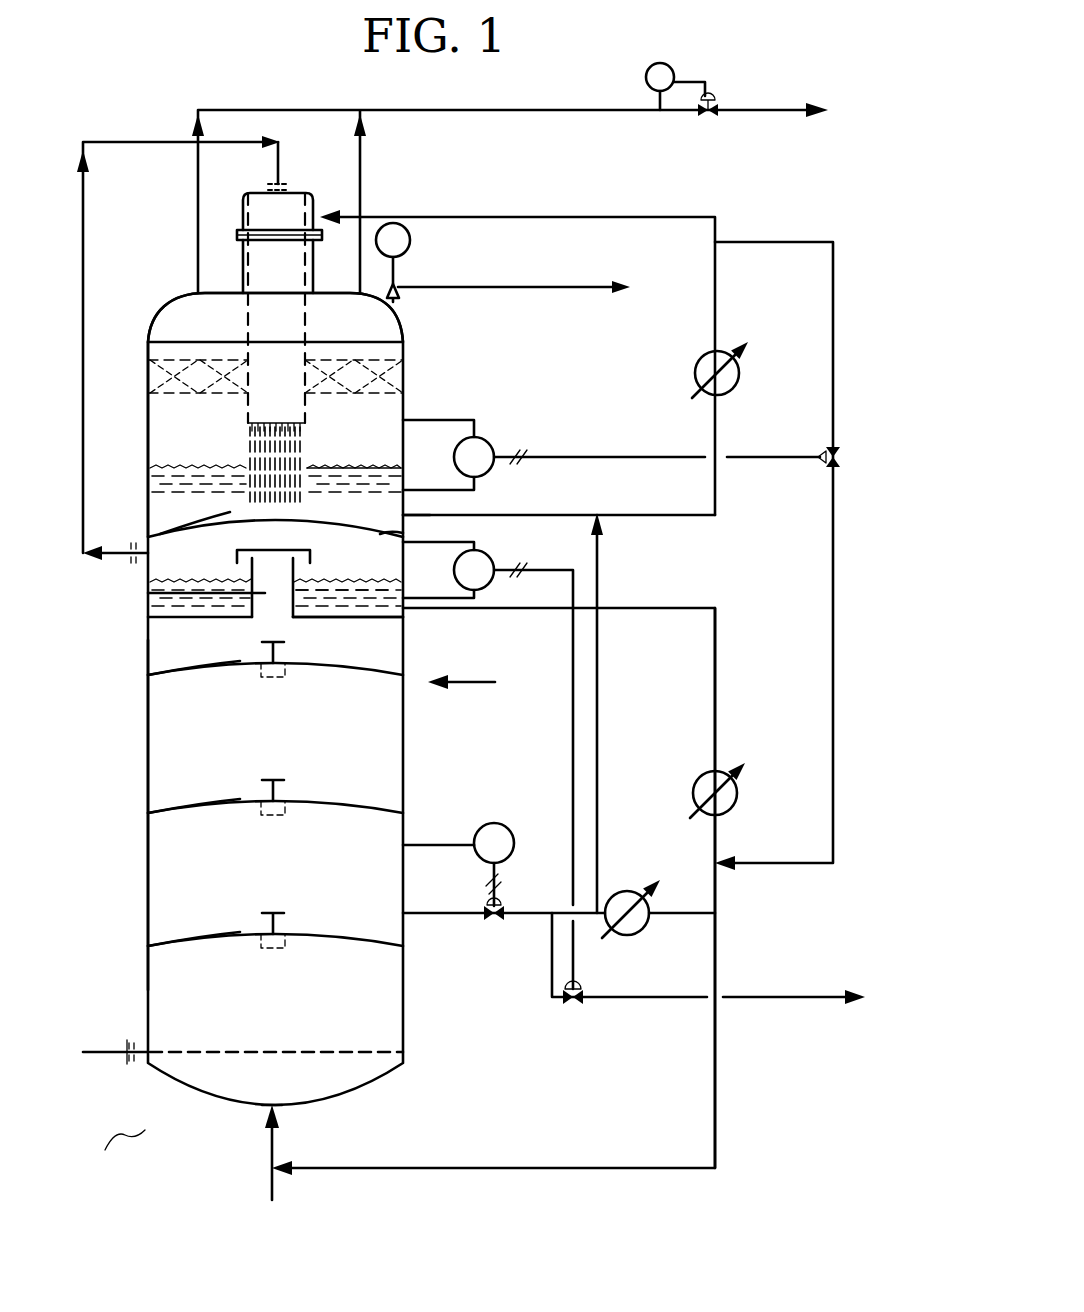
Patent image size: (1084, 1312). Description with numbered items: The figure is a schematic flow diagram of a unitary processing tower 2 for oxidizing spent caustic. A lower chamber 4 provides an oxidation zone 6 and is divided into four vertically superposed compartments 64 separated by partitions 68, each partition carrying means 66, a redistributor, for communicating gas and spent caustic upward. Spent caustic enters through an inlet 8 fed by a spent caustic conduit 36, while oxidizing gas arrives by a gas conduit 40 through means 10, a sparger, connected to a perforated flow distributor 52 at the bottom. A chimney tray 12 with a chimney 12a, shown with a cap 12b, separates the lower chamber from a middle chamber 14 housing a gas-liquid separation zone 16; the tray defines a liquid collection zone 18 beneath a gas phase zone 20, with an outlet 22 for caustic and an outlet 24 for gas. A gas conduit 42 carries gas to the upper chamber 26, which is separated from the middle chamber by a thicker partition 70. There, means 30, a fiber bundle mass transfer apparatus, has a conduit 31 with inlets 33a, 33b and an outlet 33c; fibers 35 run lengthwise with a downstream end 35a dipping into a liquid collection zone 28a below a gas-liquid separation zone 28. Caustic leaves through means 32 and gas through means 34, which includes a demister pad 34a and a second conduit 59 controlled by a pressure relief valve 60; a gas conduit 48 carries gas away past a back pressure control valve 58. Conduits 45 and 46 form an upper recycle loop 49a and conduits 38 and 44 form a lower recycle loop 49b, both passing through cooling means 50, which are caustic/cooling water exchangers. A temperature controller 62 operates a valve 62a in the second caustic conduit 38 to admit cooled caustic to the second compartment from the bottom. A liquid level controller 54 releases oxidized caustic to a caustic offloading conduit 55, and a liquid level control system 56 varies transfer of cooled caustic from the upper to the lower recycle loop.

The unitary processing tower 2 is at (472, 684).
The lower chamber 4 is at (148, 765).
The oxidation zone 6 is at (336, 648).
The inlet 8 is at (268, 1110).
The means for introducing gas 10 is at (130, 1064).
The chimney tray 12 is at (148, 600).
The chimney 12a is at (252, 570).
The chimney cap 12b is at (237, 558).
The middle chamber 14 is at (148, 577).
The gas-liquid separation zone 16 is at (403, 528).
The liquid collection zone 18 is at (365, 598).
The gas phase zone 20 is at (405, 531).
The outlet 22 is at (370, 603).
The outlet 24 is at (130, 548).
The upper chamber 26 is at (148, 428).
The gas-liquid separation zone 28 is at (354, 445).
The liquid collection zone 28a is at (345, 490).
The means for introducing cooled oxidized caustic and gas 30 is at (285, 220).
The conduit 31 is at (306, 265).
The outlet line 32 is at (410, 513).
The inlet 33a is at (278, 187).
The inlet 33b is at (282, 193).
The outlet 33c is at (305, 425).
The means for removing gas 34 is at (198, 300).
The demister pad 34a is at (403, 372).
The fibers 35 is at (250, 462).
The downstream end of fibers 35a is at (250, 498).
The spent caustic conduit 36 is at (275, 1160).
The second caustic conduit 38 is at (410, 920).
The gas conduit 40 is at (105, 1052).
The gas conduit 42 is at (83, 305).
The conduit 44 is at (505, 608).
The conduit 45 is at (410, 217).
The liquid conduit 46 is at (515, 515).
The gas conduit 48 is at (198, 180).
The upper recycle loop 49a is at (715, 320).
The lower recycle loop 49b is at (715, 622).
The cooling means 50 is at (739, 376).
The flow distributor 52 is at (173, 1052).
The liquid level controller 54 is at (485, 552).
The caustic offloading conduit 55 is at (765, 997).
The liquid level control system 56 is at (480, 437).
The back pressure control valve 58 is at (715, 92).
The second conduit 59 is at (400, 300).
The pressure relief valve 60 is at (410, 240).
The temperature controller 62 is at (485, 825).
The valve 62a is at (495, 922).
The compartments 64 is at (148, 657).
The means for communicating gas and spent caustic 66 is at (270, 660).
The partition 68 is at (170, 668).
The partition 70 is at (180, 531).